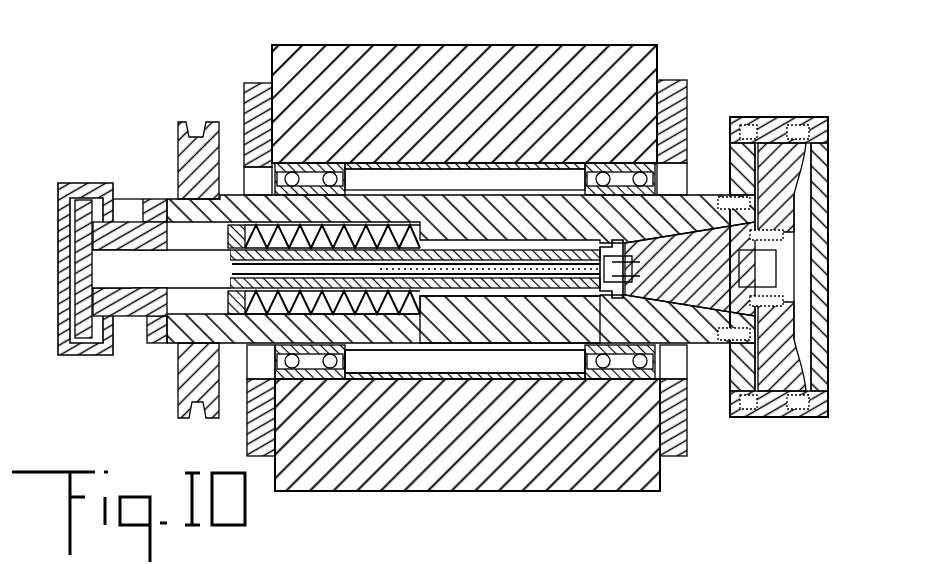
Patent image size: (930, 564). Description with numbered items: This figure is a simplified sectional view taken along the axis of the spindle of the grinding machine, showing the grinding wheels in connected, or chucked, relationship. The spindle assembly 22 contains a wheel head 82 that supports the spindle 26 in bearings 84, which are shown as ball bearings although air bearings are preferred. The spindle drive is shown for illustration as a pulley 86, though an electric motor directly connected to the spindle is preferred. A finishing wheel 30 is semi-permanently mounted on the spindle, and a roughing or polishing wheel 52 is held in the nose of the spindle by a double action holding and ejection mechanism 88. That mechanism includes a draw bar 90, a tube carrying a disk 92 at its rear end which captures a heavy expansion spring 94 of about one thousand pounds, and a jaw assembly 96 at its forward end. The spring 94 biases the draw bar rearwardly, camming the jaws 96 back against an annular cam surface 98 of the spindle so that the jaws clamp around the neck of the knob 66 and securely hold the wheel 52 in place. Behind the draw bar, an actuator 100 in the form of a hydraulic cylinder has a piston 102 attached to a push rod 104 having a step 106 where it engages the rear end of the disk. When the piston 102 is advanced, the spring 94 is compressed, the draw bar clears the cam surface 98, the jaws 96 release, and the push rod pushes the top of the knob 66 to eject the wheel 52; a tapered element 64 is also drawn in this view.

The spindle assembly 22 is at (483, 27).
The spindle 26 is at (480, 197).
The finishing wheel 30 is at (752, 418).
The roughing or polishing wheel 52 is at (790, 418).
The tapered collet nose 64 is at (665, 300).
The knob 66 is at (600, 290).
The wheel head 82 is at (272, 60).
The bearings 84 is at (302, 170).
The pulley 86 is at (179, 141).
The double action holding and ejection mechanism 88 is at (455, 377).
The draw bar 90 is at (440, 262).
The disk 92 is at (182, 358).
The expansion spring 94 is at (400, 190).
The jaw assembly 96 is at (525, 305).
The annular cam surface 98 is at (693, 190).
The actuator 100 is at (92, 358).
The piston 102 is at (66, 210).
The push rod 104 is at (560, 262).
The step 106 is at (228, 258).